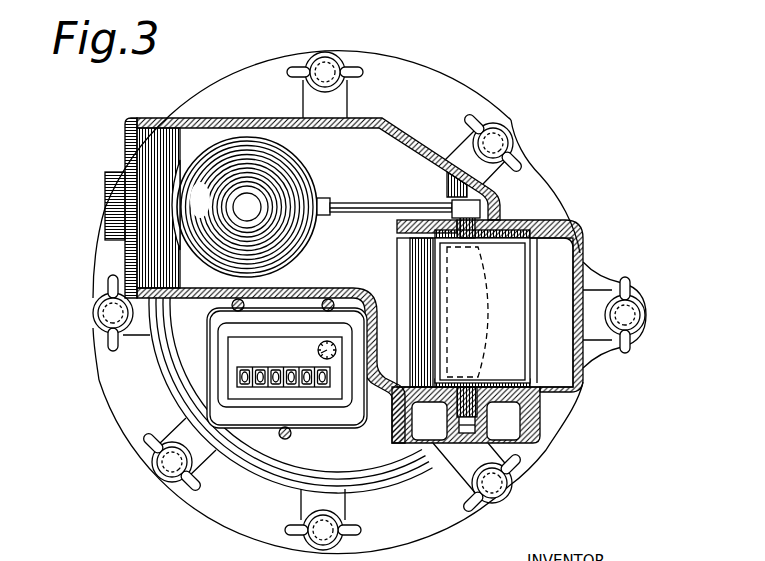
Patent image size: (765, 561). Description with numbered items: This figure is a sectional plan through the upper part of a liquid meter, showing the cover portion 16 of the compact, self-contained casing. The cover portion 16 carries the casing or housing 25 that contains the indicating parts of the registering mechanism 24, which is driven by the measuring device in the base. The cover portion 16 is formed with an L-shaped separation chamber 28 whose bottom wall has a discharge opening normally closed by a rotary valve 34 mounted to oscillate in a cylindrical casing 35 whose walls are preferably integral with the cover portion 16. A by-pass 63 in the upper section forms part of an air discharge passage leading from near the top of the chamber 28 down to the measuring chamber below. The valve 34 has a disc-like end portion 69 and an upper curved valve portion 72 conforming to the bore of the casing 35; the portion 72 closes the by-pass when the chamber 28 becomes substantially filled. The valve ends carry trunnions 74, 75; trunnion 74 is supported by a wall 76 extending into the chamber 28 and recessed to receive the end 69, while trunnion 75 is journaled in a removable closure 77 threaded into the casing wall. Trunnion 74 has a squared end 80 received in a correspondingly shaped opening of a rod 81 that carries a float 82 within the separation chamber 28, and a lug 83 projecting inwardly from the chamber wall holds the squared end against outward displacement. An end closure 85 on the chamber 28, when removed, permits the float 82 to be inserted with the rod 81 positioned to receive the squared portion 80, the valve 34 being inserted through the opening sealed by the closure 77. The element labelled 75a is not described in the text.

The cover portion 16 is at (180, 350).
The registering mechanism 24 is at (260, 384).
The casing or housing 25 is at (338, 407).
The L-shaped separation chamber 28 is at (318, 280).
The rotary valve 34 is at (482, 308).
The cylindrical casing 35 is at (533, 321).
The by-pass 63 is at (556, 268).
The disc-like end portion 69 is at (545, 226).
The upper curved valve portion 72 is at (432, 268).
The trunnion 74 is at (482, 222).
The trunnion 75 is at (473, 407).
The valve 75a is at (470, 422).
The wall 76 is at (413, 222).
The removable closure 77 is at (538, 401).
The squared end 80 is at (498, 192).
The rod 81 is at (367, 202).
The float 82 is at (325, 243).
The lug 83 is at (506, 151).
The end closure 85 is at (125, 133).